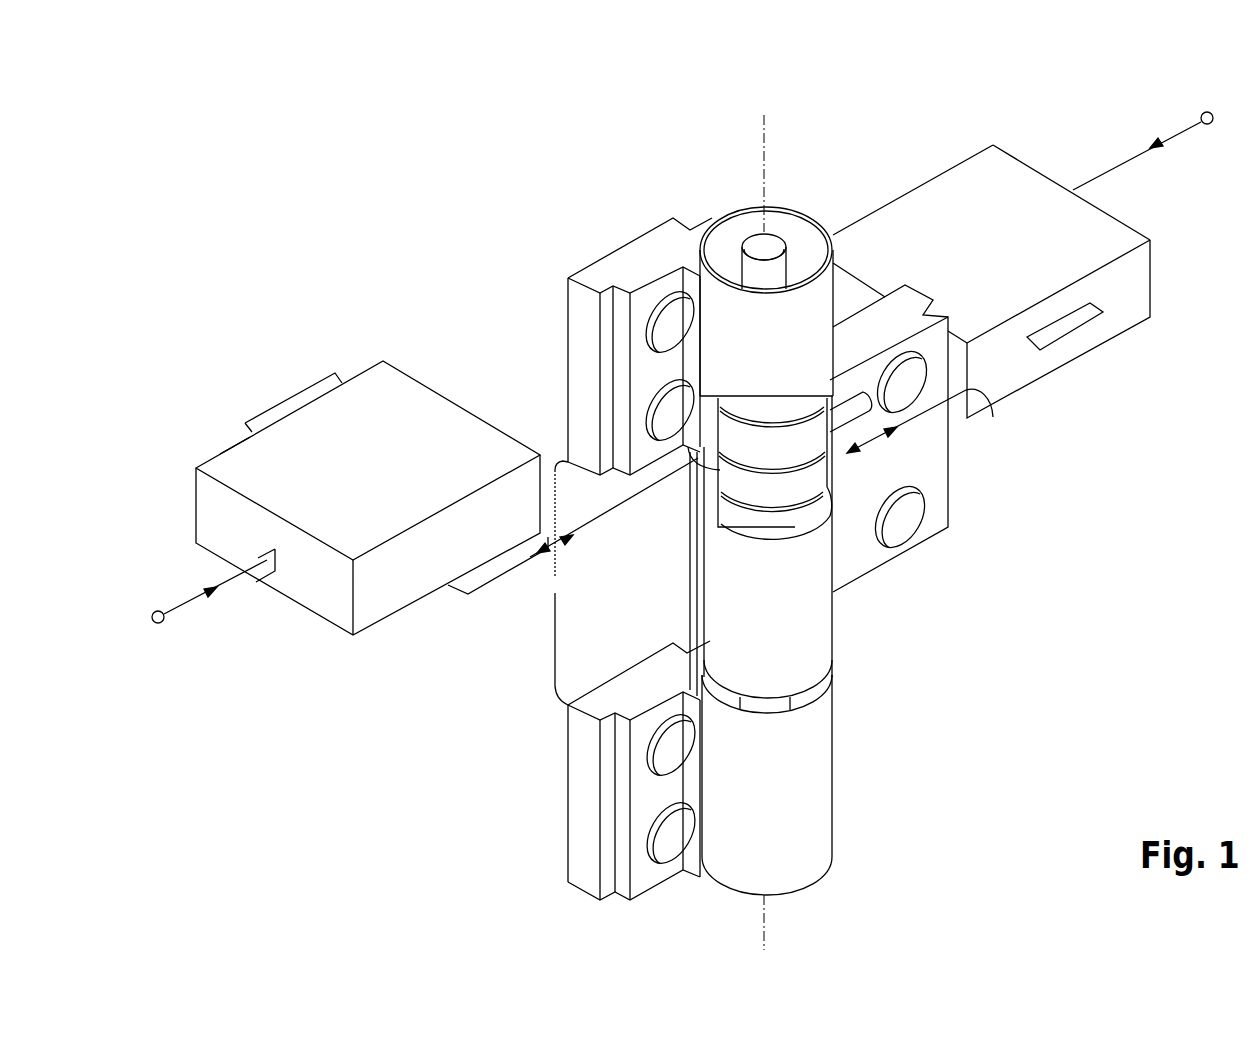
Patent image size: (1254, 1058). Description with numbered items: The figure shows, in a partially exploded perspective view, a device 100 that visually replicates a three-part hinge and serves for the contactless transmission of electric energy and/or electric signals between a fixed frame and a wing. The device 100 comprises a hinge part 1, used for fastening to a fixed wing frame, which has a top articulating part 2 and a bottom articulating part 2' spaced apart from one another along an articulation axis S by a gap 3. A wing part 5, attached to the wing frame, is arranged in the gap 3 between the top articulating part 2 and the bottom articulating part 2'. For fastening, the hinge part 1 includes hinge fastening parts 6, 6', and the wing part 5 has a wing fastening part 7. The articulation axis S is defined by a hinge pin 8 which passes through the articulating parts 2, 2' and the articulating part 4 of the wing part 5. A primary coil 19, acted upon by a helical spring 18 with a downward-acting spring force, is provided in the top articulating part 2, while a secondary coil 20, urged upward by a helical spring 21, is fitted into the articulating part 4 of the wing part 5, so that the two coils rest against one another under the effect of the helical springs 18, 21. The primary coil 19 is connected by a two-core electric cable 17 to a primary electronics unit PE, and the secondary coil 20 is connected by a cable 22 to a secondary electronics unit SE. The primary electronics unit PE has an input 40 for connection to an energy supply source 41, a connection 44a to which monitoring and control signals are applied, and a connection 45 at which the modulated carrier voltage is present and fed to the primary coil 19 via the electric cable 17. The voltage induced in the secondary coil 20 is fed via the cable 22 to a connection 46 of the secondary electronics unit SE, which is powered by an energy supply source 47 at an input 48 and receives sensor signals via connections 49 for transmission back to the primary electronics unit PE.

The device 100 is at (702, 531).
The hinge part 1 is at (770, 532).
The top articulating part 2 is at (804, 301).
The bottom articulating part 2' is at (796, 785).
The gap 3 is at (597, 578).
The articulating part 4 is at (733, 547).
The wing part 5 is at (930, 441).
The hinge fastening part 6 is at (614, 346).
The hinge fastening part 6' is at (610, 770).
The wing fastening part 7 is at (909, 438).
The hinge pin 8 is at (742, 219).
The electric cable 17 is at (614, 516).
The helical spring 18 is at (664, 452).
The primary coil 19 is at (772, 438).
The secondary coil 20 is at (772, 484).
The helical spring 21 is at (776, 545).
The cable 22 is at (917, 437).
The input 40 is at (259, 596).
The energy supply source 41 is at (209, 623).
The connection 44a is at (289, 383).
The connection 45 is at (492, 612).
The connection 46 is at (1004, 426).
The energy supply source 47 is at (1162, 152).
The input 48 is at (1071, 182).
The connections 49 is at (658, 378).
The articulation axis S is at (793, 532).
The primary electronics unit PE is at (350, 510).
The secondary electronics unit SE is at (1042, 265).